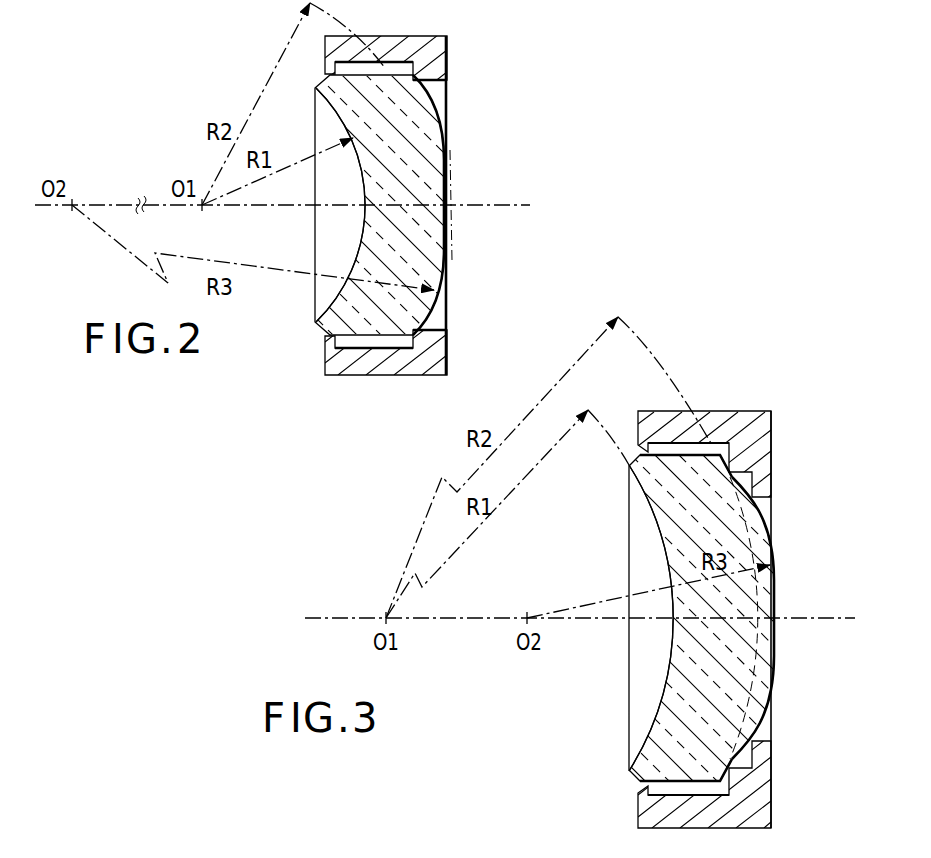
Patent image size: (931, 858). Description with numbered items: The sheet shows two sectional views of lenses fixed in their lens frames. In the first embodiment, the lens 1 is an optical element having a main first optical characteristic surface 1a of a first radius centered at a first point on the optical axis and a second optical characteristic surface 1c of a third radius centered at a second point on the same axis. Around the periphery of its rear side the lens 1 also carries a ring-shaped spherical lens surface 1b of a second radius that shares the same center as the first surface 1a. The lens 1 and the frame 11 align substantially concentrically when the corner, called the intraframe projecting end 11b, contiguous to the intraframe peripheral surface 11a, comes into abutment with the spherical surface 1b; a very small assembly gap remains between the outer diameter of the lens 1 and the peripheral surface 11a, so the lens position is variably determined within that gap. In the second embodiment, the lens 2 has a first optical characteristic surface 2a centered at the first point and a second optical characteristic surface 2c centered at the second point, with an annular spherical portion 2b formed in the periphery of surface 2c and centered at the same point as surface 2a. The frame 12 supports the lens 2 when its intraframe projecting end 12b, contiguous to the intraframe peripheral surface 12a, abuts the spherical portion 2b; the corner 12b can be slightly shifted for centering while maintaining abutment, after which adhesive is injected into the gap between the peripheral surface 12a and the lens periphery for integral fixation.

In FIG. 2, the lens 1 is at (307, 78).
In FIG. 2, the first optical characteristic surface 1a is at (340, 205).
In FIG. 2, the lens surface 1b is at (438, 108).
In FIG. 2, the second optical characteristic surface 1c is at (438, 252).
In FIG. 2, the frame 11 is at (452, 52).
In FIG. 2, the intraframe peripheral surface 11a is at (376, 61).
In FIG. 2, the intraframe projecting end 11b is at (427, 62).
In FIG. 3, the lens 2 is at (796, 606).
In FIG. 3, the first optical characteristic surface 2a is at (662, 534).
In FIG. 3, the spherical portion 2b is at (752, 496).
In FIG. 3, the second optical characteristic surface 2c is at (770, 660).
In FIG. 3, the frame 12 is at (767, 410).
In FIG. 3, the intraframe peripheral surface 12a is at (656, 442).
In FIG. 3, the intraframe projecting end 12b is at (740, 464).